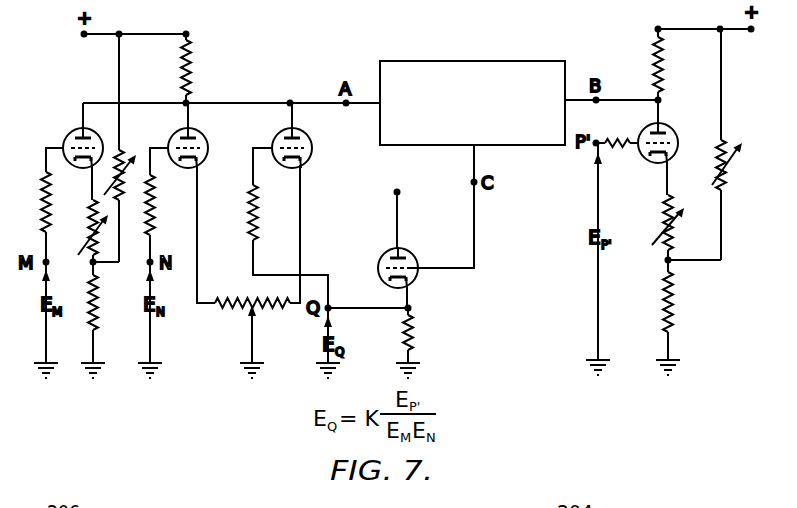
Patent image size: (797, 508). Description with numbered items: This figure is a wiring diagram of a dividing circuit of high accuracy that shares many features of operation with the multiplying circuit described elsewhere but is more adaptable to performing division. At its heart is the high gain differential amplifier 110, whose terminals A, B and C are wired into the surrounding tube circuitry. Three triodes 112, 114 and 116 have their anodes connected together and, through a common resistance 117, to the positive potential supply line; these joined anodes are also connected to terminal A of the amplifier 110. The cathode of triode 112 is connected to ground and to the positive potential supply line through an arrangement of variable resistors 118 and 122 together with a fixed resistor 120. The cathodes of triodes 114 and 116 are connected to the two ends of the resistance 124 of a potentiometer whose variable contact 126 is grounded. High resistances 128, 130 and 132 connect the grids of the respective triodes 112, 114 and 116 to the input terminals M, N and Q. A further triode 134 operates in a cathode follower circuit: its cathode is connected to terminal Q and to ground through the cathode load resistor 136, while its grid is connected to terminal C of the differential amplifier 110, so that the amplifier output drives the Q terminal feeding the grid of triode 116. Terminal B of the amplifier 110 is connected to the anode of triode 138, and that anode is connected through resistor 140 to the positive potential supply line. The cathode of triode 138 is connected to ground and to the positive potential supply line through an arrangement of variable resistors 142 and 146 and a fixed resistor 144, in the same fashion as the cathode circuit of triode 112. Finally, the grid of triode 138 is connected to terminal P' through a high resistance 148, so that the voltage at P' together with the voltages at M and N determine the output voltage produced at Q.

The high gain differential amplifier 110 is at (483, 62).
The triode 112 is at (70, 134).
The triode 114 is at (203, 136).
The triode 116 is at (305, 134).
The common resistance 117 is at (190, 66).
The variable resistor 118 is at (86, 222).
The fixed resistor 120 is at (99, 310).
The variable resistor 122 is at (121, 150).
The resistance of potentiometer 124 is at (240, 300).
The variable contact 126 is at (256, 313).
The high resistance 128 is at (40, 200).
The high resistance 130 is at (156, 202).
The high resistance 132 is at (248, 206).
The triode 134 is at (378, 265).
The cathode load resistor 136 is at (415, 334).
The triode 138 is at (645, 128).
The resistor 140 is at (652, 60).
The variable resistor 142 is at (675, 240).
The fixed resistor 144 is at (662, 307).
The variable resistor 146 is at (742, 185).
The high resistance 148 is at (614, 152).